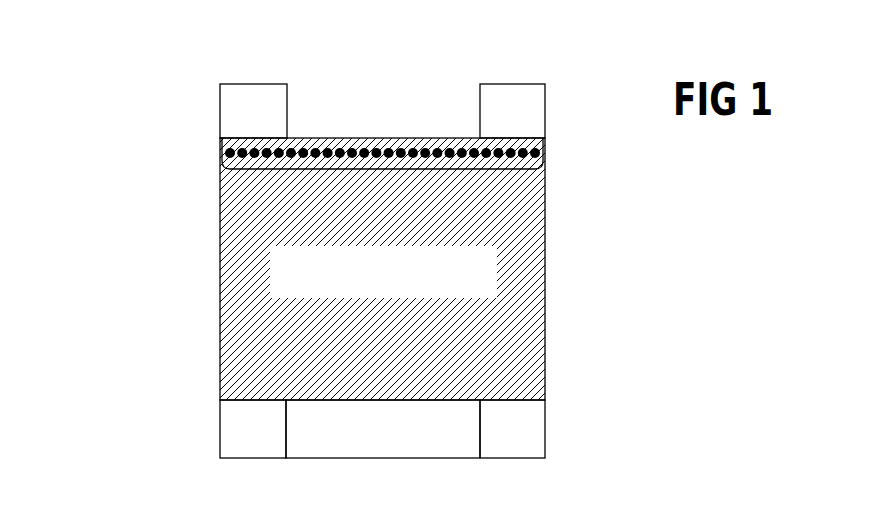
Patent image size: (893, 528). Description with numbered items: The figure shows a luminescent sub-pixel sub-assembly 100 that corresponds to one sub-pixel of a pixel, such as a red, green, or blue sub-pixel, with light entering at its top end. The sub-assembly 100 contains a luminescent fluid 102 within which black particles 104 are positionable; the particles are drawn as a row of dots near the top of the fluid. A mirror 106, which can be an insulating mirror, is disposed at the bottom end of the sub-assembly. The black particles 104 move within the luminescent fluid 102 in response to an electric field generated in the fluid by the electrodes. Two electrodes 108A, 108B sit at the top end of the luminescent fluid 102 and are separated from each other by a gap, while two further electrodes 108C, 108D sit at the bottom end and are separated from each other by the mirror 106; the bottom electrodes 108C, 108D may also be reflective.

The luminescent sub-pixel sub-assembly 100 is at (99, 296).
The luminescent fluid 102 is at (366, 293).
The black particles 104 is at (370, 169).
The mirror 106 is at (366, 450).
The electrode 108A is at (230, 124).
The electrode 108B is at (531, 121).
The electrode 108C is at (231, 444).
The electrode 108D is at (531, 444).